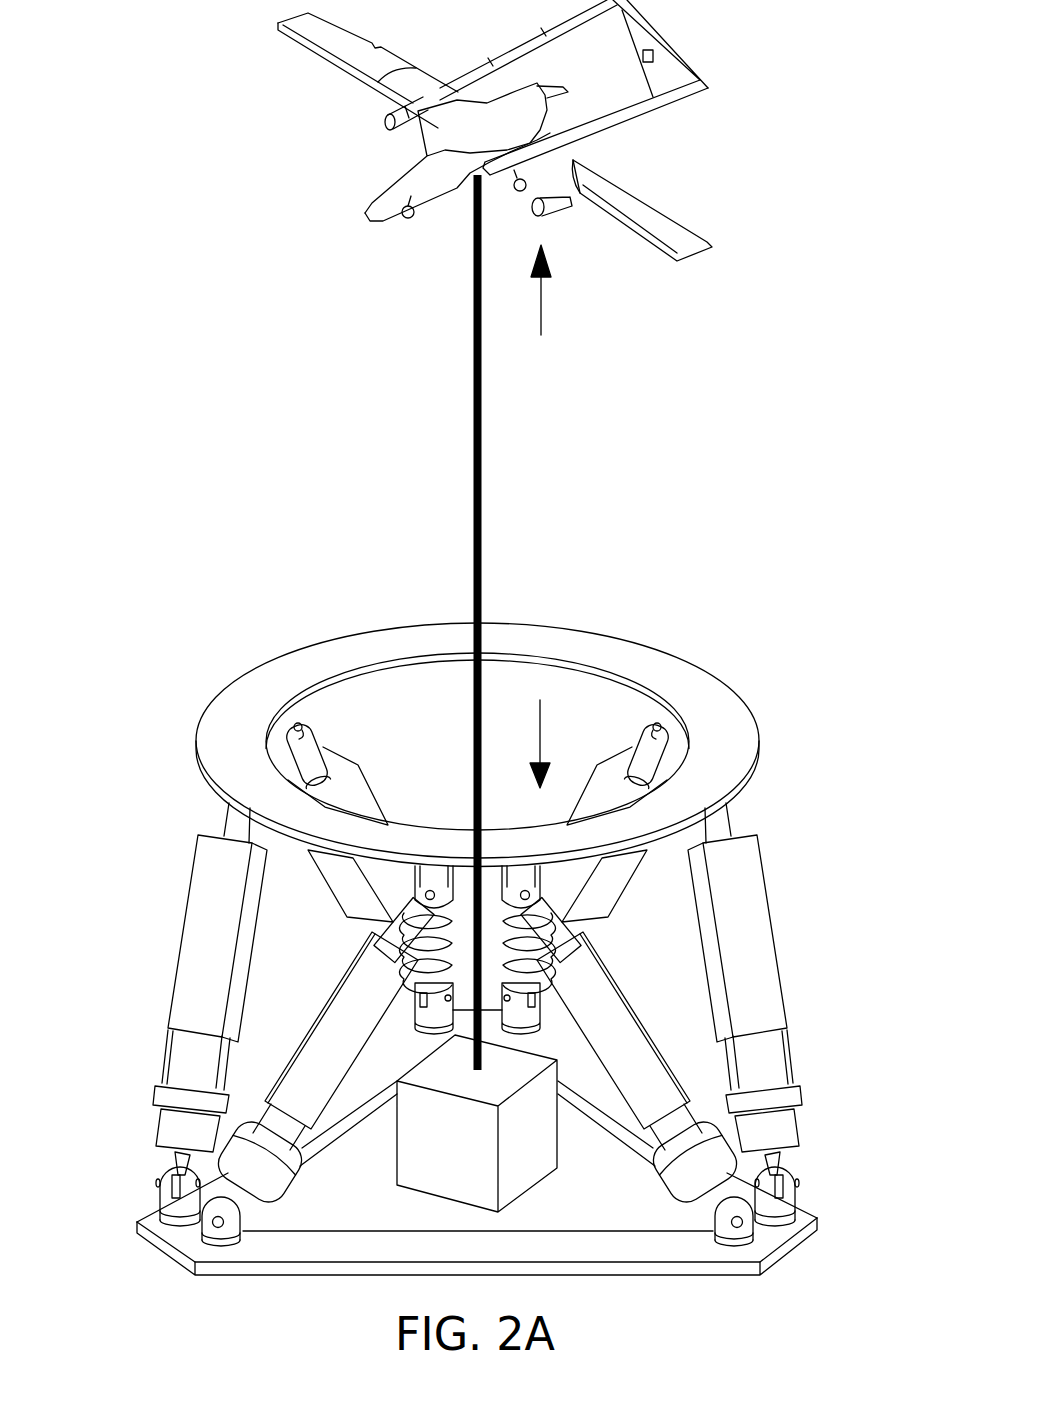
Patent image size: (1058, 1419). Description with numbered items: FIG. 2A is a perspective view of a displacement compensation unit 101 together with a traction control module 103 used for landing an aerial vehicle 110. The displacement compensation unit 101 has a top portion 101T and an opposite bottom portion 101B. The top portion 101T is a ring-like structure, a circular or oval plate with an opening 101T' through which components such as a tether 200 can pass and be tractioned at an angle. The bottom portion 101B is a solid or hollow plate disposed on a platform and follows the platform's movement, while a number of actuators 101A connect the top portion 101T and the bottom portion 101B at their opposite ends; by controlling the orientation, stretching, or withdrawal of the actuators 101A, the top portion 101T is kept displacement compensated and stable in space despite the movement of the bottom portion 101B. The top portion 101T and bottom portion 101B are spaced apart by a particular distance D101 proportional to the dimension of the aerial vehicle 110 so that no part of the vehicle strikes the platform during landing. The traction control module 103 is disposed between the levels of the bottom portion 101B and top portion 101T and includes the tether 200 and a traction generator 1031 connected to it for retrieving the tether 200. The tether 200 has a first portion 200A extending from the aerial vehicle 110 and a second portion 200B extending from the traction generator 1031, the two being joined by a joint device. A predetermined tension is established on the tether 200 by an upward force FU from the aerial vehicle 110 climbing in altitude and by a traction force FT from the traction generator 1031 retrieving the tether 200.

The aerial vehicle 110 is at (815, 51).
The tether 200 is at (458, 622).
The first portion of the tether 200A is at (445, 190).
The second portion of the tether 200B is at (455, 1070).
The displacement compensation unit 101 is at (473, 921).
The top portion 101T is at (521, 745).
The opening 101T' is at (560, 636).
The actuators 101A is at (758, 940).
The bottom portion 101B is at (815, 1222).
The traction control module 103 is at (415, 1039).
The traction generator 1031 is at (473, 1160).
The particular distance D101 is at (195, 741).
The upward force FU is at (528, 290).
The traction force FT is at (528, 744).